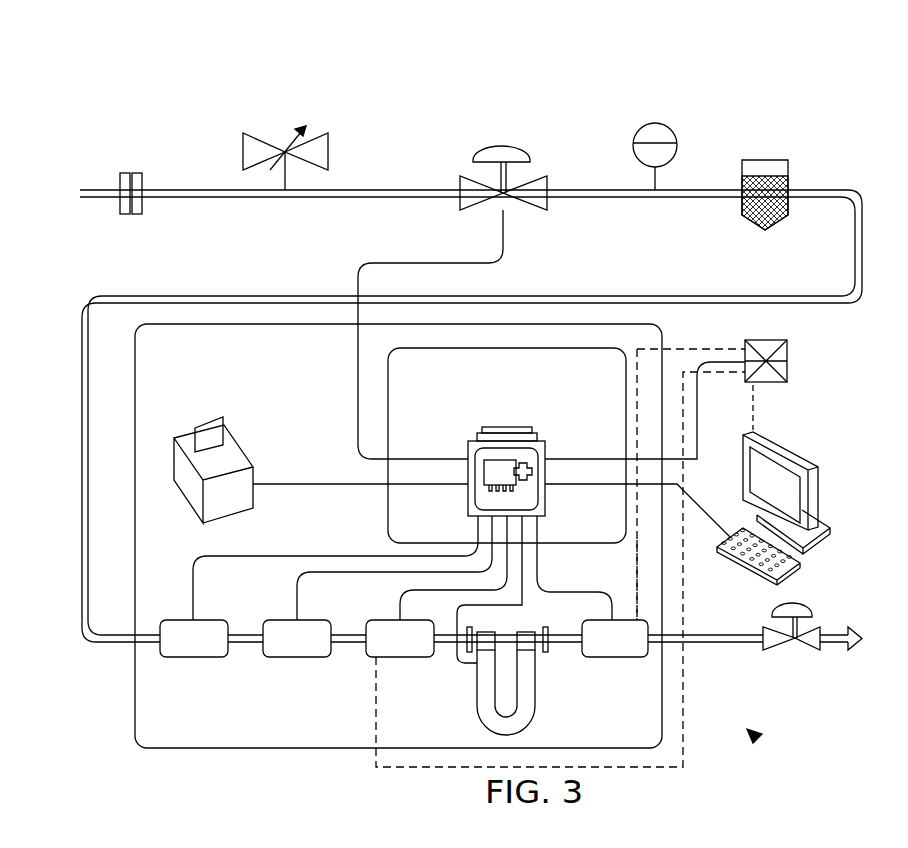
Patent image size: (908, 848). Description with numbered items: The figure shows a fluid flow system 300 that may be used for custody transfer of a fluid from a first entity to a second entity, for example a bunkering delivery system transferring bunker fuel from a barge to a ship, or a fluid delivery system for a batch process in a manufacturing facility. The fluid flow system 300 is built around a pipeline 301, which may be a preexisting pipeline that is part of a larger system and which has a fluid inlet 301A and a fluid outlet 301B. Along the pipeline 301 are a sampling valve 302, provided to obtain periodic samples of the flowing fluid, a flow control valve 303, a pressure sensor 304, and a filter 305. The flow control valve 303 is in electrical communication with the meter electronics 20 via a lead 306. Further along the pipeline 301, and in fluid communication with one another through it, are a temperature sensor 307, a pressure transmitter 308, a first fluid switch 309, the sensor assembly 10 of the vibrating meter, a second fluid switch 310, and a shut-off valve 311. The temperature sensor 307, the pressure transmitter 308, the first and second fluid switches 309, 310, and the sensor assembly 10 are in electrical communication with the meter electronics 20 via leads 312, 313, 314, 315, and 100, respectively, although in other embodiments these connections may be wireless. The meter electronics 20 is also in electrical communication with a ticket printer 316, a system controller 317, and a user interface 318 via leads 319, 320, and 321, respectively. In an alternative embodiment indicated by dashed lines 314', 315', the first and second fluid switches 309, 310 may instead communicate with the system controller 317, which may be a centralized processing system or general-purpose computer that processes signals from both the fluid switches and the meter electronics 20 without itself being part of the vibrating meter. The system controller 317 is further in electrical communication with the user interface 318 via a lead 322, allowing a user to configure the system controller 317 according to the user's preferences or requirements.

The fluid flow system 300 is at (752, 734).
The pipeline 301 is at (212, 296).
The fluid inlet 301A is at (100, 203).
The fluid outlet 301B is at (836, 652).
The sampling valve 302 is at (330, 148).
The flow control valve 303 is at (522, 163).
The pressure sensor 304 is at (678, 146).
The filter 305 is at (778, 160).
The lead 306 is at (505, 245).
The temperature sensor 307 is at (181, 659).
The pressure transmitter 308 is at (287, 659).
The first fluid switch 309 is at (398, 659).
The second fluid switch 310 is at (612, 659).
The shut-off valve 311 is at (772, 652).
The lead 312 is at (243, 556).
The lead 313 is at (320, 574).
The lead 314 is at (453, 570).
The dashed line 314' is at (560, 575).
The lead 315 is at (574, 568).
The dashed line 315' is at (681, 580).
The ticket printer 316 is at (212, 427).
The system controller 317 is at (788, 346).
The user interface 318 is at (800, 452).
The lead 319 is at (316, 486).
The lead 320 is at (720, 360).
The lead 321 is at (679, 488).
The lead 322 is at (756, 400).
The meter electronics 20 is at (547, 492).
The lead 100 is at (513, 606).
The sensor assembly 10 is at (476, 704).